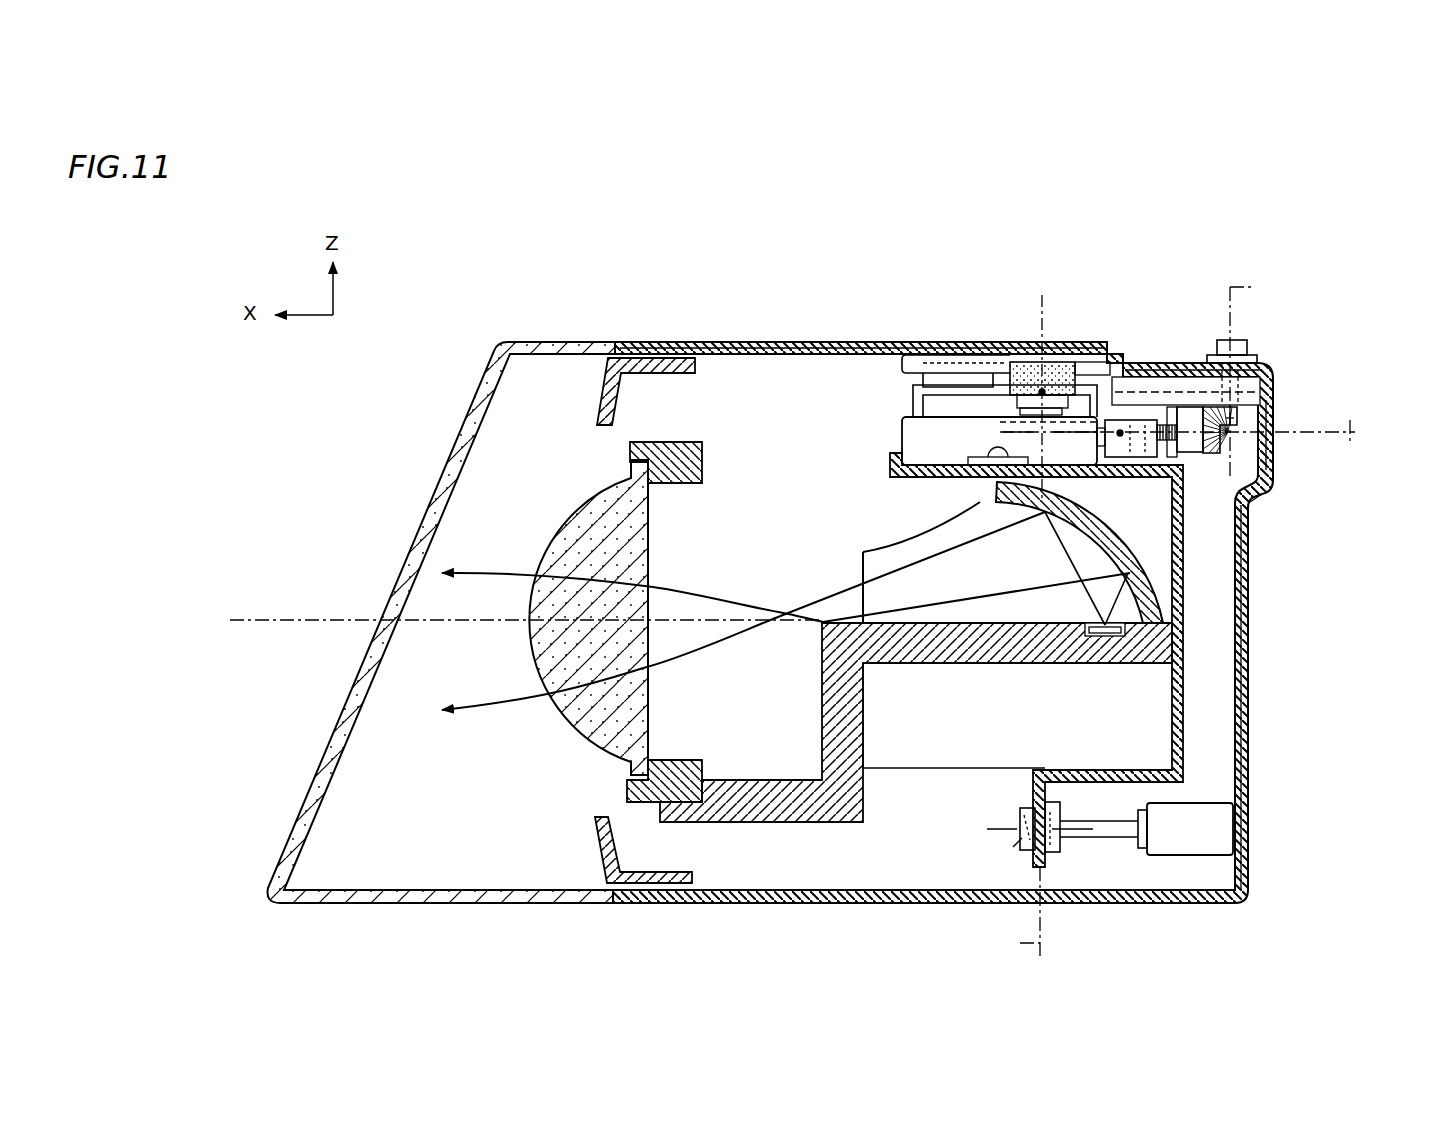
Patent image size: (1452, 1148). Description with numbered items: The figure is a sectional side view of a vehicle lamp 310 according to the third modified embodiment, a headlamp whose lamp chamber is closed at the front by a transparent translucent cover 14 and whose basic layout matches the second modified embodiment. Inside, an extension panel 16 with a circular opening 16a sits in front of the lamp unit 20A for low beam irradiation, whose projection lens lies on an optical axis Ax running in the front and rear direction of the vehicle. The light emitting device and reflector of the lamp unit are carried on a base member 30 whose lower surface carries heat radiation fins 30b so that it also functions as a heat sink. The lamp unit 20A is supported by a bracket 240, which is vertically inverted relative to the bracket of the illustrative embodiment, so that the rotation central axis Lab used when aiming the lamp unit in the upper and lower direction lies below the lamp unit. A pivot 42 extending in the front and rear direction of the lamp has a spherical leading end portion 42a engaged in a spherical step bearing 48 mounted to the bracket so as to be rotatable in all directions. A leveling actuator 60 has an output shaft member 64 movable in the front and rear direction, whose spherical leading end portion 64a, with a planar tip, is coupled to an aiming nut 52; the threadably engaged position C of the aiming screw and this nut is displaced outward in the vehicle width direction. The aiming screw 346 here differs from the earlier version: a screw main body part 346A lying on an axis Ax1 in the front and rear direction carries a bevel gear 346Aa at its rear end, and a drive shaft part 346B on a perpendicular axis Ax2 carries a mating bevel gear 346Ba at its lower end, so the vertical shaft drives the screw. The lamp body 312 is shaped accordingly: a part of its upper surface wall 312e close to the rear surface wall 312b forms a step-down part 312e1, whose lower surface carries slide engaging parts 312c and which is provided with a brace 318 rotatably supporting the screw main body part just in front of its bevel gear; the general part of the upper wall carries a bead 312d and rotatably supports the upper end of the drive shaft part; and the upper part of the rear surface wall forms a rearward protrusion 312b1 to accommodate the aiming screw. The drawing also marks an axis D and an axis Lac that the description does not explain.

The vehicle lamp 310 is at (590, 262).
The translucent cover 14 is at (460, 430).
The extension panel 16 is at (600, 390).
The circular opening 16a is at (600, 818).
The lamp unit for low beam irradiation 20A is at (510, 515).
The base member 30 is at (1098, 668).
The heat radiation fins 30b is at (898, 712).
The pivot 42 is at (1100, 843).
The leading end portion of the pivot 42a is at (1020, 822).
The spherical step bearing 48 is at (1017, 808).
The aiming nut 52 is at (1192, 455).
The leveling actuator 60 is at (900, 418).
The output shaft member 64 is at (1043, 417).
The leading end portion of the output shaft member 64a is at (1063, 362).
The bracket 240 is at (1185, 598).
The lamp body 312 is at (1250, 678).
The rear surface wall 312b is at (1250, 738).
The rearward protrusion 312b1 is at (1275, 441).
The slide engaging parts 312c is at (1262, 372).
The bead 312d is at (910, 360).
The upper surface wall 312e is at (950, 343).
The step-down part 312e1 is at (1170, 415).
The brace 318 is at (1250, 516).
The aiming screw 346 is at (1233, 246).
The screw main body part 346A is at (1163, 425).
The bevel gear 346Aa is at (1212, 449).
The drive shaft part 346B is at (1227, 337).
The bevel gear 346Ba is at (1246, 420).
The optical axis Ax is at (293, 612).
The axis Ax1 is at (1350, 425).
The axis Ax2 is at (1255, 287).
The threadably engaged position C is at (1120, 436).
The pivot axis D is at (1040, 390).
The rotation central axis Lab is at (1013, 847).
The rotation axis Lac is at (1030, 945).